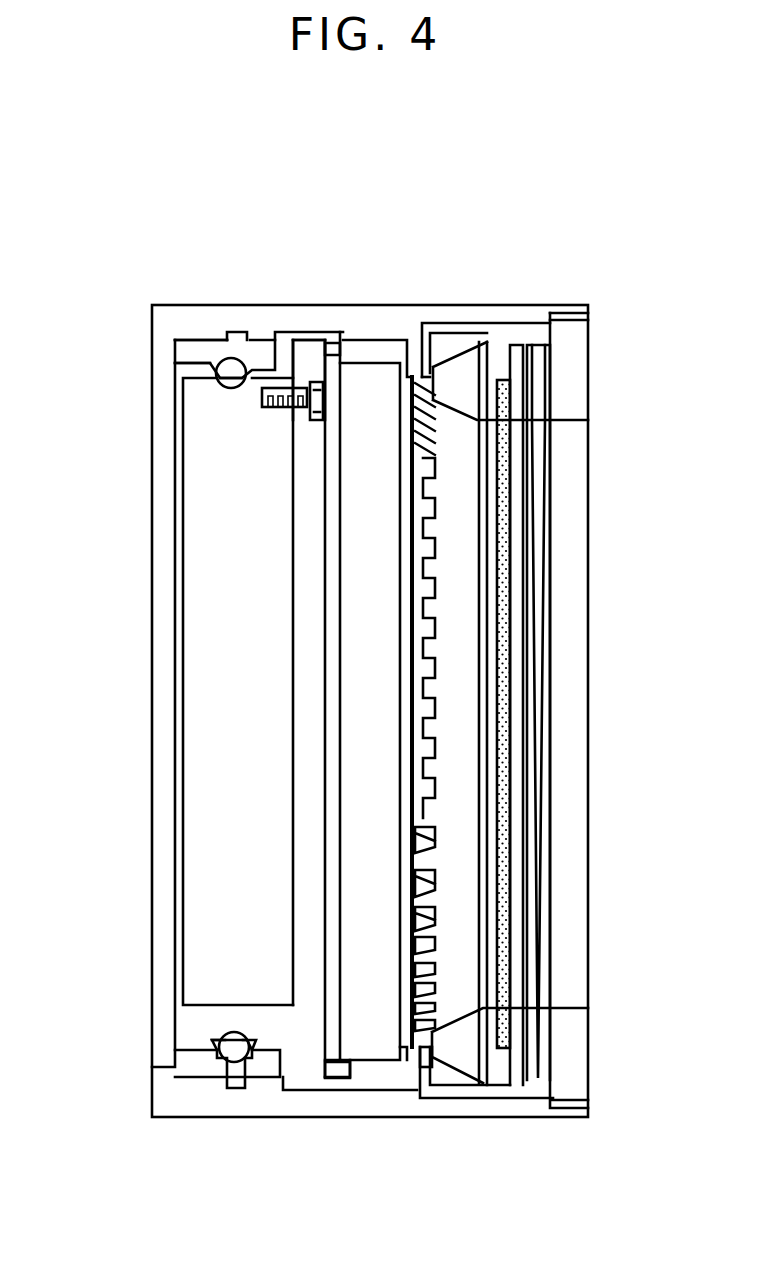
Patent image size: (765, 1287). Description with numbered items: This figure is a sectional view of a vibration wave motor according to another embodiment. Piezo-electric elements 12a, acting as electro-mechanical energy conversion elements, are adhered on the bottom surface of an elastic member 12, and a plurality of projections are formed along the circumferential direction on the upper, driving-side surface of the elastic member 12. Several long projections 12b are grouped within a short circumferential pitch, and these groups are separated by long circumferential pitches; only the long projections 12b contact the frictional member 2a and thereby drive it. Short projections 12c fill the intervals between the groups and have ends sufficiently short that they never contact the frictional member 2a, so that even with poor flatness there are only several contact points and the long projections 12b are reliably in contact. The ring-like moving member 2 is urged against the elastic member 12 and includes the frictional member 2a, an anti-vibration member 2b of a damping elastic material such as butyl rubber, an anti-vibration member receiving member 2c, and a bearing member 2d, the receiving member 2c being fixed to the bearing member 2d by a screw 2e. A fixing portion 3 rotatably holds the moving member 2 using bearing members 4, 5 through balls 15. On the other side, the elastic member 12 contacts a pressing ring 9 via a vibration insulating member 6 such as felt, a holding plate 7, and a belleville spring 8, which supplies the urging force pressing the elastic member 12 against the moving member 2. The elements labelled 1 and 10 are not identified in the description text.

The lower wedge guide of carriage 1 is at (470, 1062).
The moving member 2 is at (372, 292).
The frictional member 2a is at (373, 348).
The anti-vibration member 2b is at (333, 346).
The anti-vibration member receiving member 2c is at (303, 348).
The bearing member 2d is at (190, 403).
The screw 2e is at (262, 400).
The fixing portion 3 is at (257, 306).
The bearing member 4 is at (203, 348).
The bearing member 5 is at (250, 346).
The vibration insulating member 6 is at (505, 450).
The holding plate 7 is at (548, 308).
The belleville spring 8 is at (540, 432).
The pressing ring 9 is at (582, 385).
The lower stop block 10 is at (423, 1058).
The elastic member 12 is at (460, 355).
The piezo-electric elements 12a is at (512, 348).
The long projections 12b is at (425, 820).
The short projections 12c is at (440, 690).
The balls 15 is at (232, 1052).